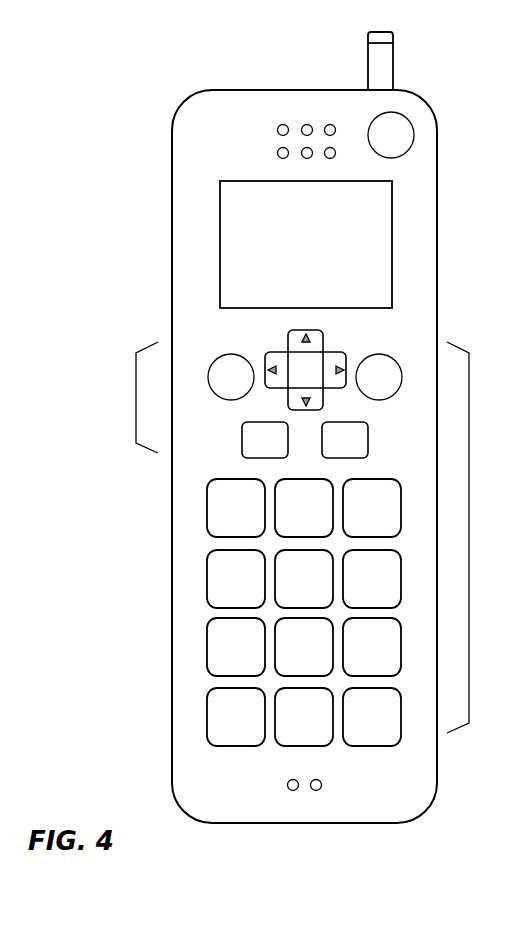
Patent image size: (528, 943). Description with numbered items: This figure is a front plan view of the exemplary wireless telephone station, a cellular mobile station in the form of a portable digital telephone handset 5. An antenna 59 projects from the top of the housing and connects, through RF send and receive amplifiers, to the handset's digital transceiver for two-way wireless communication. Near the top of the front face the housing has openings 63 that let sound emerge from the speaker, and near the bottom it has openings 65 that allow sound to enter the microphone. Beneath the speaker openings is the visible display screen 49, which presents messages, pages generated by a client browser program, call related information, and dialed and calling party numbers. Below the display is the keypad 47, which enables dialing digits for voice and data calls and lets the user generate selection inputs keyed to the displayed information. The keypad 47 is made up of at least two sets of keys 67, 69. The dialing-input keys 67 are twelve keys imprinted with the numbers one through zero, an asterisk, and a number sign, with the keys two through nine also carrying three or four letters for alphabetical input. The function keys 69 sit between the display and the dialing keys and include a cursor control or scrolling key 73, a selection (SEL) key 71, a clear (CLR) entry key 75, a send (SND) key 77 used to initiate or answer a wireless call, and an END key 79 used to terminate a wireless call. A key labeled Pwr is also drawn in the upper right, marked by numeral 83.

The handset 5 is at (173, 200).
The keypad 47 is at (469, 527).
The display 49 is at (393, 225).
The antenna 59 is at (368, 80).
The openings 63 is at (277, 120).
The openings 65 is at (285, 790).
The dialing-input keys 67 is at (158, 733).
The function keys 69 is at (136, 392).
The selection (SEL) key 71 is at (403, 362).
The cursor control or scrolling key 73 is at (347, 352).
The clear (CLR) entry key 75 is at (208, 363).
The send (SND) key 77 is at (242, 442).
The END key 79 is at (368, 442).
The power key 83 is at (417, 122).